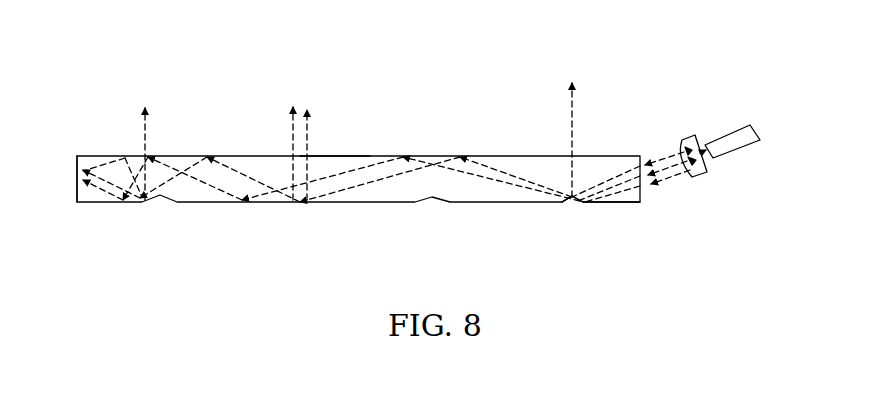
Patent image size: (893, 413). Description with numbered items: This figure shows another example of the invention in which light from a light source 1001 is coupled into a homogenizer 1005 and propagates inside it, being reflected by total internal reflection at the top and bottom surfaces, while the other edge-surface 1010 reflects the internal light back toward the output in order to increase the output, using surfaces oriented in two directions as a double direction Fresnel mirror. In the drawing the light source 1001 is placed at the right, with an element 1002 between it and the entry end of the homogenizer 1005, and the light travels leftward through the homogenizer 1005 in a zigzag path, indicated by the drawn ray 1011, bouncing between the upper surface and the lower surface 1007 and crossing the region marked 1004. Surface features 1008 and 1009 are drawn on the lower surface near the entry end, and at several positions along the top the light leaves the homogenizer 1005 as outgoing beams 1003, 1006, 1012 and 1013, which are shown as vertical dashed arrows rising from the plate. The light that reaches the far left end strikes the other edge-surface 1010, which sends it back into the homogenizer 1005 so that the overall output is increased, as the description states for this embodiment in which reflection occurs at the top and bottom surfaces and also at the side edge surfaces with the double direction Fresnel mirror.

The light source 1001 is at (732, 133).
The collimating lens 1002 is at (687, 140).
The out-coupled light beam 1003 is at (575, 123).
The light guide plate 1004 is at (378, 158).
The homogenizer 1005 is at (335, 158).
The out-coupled light beam 1006 is at (308, 127).
The bottom surface of light guide 1007 is at (612, 203).
The micro-structure notch 1008 is at (571, 203).
The notch facet 1009 is at (565, 203).
The other edge-surface 1010 is at (77, 163).
The guided light ray 1011 is at (99, 192).
The out-coupled light beam 1012 is at (147, 128).
The out-coupled light beam 1013 is at (292, 130).